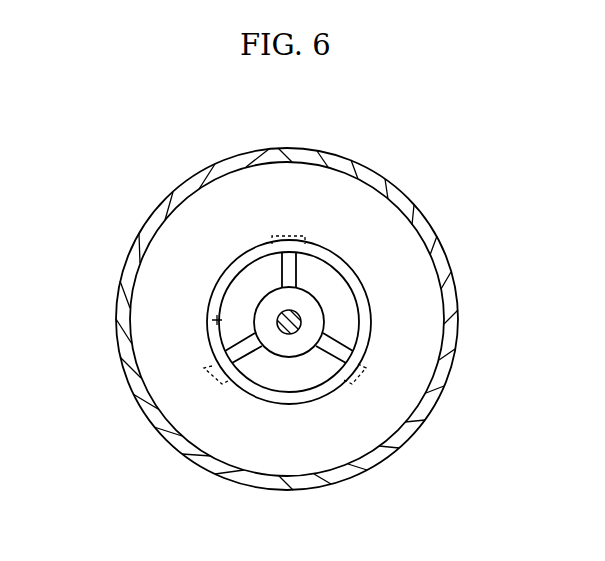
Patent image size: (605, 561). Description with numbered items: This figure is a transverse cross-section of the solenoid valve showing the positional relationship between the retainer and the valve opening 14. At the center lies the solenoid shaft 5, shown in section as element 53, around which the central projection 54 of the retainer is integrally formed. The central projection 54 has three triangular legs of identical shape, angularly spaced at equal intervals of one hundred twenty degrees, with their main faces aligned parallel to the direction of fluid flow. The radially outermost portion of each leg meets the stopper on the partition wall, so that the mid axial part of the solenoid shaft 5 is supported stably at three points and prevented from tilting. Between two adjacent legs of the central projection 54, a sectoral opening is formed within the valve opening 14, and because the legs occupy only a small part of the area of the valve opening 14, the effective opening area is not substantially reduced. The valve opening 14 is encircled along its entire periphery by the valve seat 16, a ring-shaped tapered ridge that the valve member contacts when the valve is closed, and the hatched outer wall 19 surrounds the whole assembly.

The solenoid shaft 5 is at (298, 310).
The valve opening 14 is at (217, 321).
The valve seat 16 is at (328, 387).
The outer ring 19 is at (447, 363).
The hub bore 53 is at (313, 323).
The central projection 54 is at (277, 271).